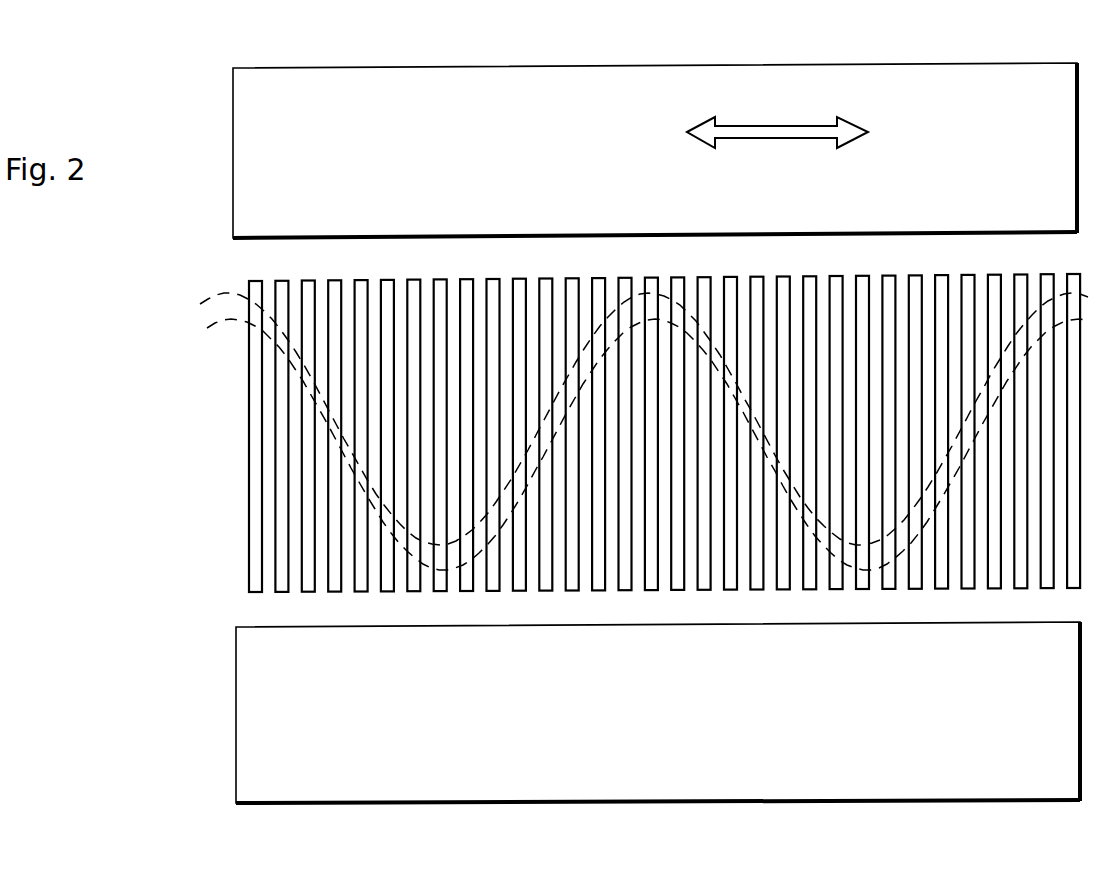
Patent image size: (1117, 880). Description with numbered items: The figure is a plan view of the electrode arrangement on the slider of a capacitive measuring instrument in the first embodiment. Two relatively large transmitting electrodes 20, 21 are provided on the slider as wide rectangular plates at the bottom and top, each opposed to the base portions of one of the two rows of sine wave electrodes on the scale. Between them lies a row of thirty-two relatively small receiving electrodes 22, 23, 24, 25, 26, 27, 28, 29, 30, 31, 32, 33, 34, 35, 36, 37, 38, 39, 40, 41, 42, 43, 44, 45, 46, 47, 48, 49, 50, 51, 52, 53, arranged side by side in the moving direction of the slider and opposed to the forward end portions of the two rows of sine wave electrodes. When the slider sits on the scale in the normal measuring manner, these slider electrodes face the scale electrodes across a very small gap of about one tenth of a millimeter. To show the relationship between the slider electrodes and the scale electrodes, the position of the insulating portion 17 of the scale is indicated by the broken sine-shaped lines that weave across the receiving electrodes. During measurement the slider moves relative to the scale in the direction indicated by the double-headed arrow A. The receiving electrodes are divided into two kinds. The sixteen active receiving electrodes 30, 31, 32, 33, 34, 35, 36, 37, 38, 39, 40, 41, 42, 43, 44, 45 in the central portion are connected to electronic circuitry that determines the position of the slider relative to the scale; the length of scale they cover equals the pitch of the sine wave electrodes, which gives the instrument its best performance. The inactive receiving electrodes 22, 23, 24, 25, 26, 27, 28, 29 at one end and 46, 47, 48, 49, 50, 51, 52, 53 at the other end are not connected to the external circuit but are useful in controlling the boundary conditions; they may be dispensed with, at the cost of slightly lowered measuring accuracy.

The insulating portion 17 is at (231, 314).
The transmitting electrode 20 is at (400, 804).
The transmitting electrode 21 is at (416, 67).
The arrow A is at (772, 125).
The inactive receiving electrode 22 is at (252, 280).
The inactive receiving electrode 23 is at (279, 593).
The inactive receiving electrode 24 is at (305, 280).
The inactive receiving electrode 25 is at (332, 593).
The inactive receiving electrode 26 is at (358, 279).
The inactive receiving electrode 27 is at (385, 592).
The inactive receiving electrode 28 is at (410, 279).
The inactive receiving electrode 29 is at (438, 592).
The active receiving electrode 30 is at (463, 278).
The active receiving electrode 31 is at (491, 592).
The active receiving electrode 32 is at (516, 278).
The active receiving electrode 33 is at (543, 592).
The active receiving electrode 34 is at (569, 277).
The active receiving electrode 35 is at (596, 591).
The active receiving electrode 36 is at (621, 277).
The active receiving electrode 37 is at (649, 591).
The active receiving electrode 38 is at (674, 276).
The active receiving electrode 39 is at (702, 591).
The active receiving electrode 40 is at (727, 276).
The active receiving electrode 41 is at (754, 591).
The active receiving electrode 42 is at (780, 275).
The active receiving electrode 43 is at (807, 590).
The active receiving electrode 44 is at (833, 275).
The active receiving electrode 45 is at (860, 590).
The inactive receiving electrode 46 is at (885, 275).
The inactive receiving electrode 47 is at (913, 590).
The inactive receiving electrode 48 is at (938, 274).
The inactive receiving electrode 49 is at (966, 590).
The inactive receiving electrode 50 is at (991, 274).
The inactive receiving electrode 51 is at (1018, 589).
The inactive receiving electrode 52 is at (1044, 273).
The inactive receiving electrode 53 is at (1071, 589).